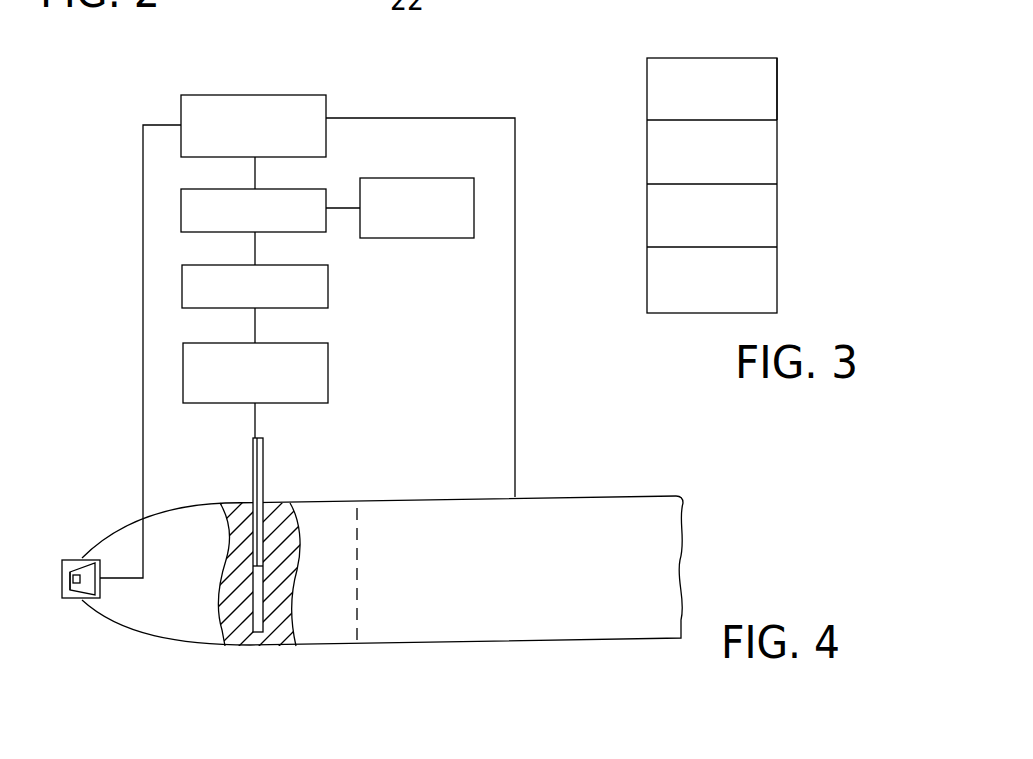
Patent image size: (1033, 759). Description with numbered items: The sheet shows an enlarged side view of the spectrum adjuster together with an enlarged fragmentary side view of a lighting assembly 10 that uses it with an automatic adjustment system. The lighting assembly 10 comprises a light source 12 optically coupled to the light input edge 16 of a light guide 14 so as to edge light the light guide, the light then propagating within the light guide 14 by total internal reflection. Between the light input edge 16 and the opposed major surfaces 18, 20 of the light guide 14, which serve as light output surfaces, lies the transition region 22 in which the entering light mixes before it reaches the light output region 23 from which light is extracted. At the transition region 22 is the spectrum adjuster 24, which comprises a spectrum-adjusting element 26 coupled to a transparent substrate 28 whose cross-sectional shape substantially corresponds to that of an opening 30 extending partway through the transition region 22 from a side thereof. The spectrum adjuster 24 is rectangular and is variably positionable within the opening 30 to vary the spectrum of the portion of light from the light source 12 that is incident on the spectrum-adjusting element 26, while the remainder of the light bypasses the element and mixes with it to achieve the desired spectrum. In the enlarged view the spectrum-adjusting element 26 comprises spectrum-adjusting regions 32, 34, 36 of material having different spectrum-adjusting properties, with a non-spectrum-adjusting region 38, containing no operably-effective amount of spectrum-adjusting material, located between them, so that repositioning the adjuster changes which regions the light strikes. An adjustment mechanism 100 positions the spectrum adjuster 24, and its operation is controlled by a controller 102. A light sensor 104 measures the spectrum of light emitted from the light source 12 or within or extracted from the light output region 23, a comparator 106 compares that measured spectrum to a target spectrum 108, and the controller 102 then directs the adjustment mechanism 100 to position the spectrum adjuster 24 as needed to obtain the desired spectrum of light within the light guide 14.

In FIG. 4, the lighting assembly 10 is at (540, 466).
In FIG. 4, the light source 12 is at (66, 573).
In FIG. 4, the light guide 14 is at (642, 512).
In FIG. 4, the light input edge 16 is at (105, 560).
In FIG. 4, the major surface 18 is at (592, 497).
In FIG. 4, the major surface 20 is at (608, 643).
In FIG. 4, the transition region 22 is at (333, 632).
In FIG. 4, the light output region 23 is at (486, 497).
In FIG. 3, the spectrum adjuster 24 is at (780, 45).
In FIG. 4, the spectrum adjuster 24 is at (272, 454).
In FIG. 3, the spectrum-adjusting element 26 is at (765, 79).
In FIG. 4, the spectrum-adjusting element 26 is at (266, 490).
In FIG. 4, the substrate 28 is at (255, 480).
In FIG. 4, the opening 30 is at (297, 527).
In FIG. 3, the spectrum-adjusting region 32 is at (652, 91).
In FIG. 4, the spectrum-adjusting region 32 is at (297, 547).
In FIG. 3, the spectrum-adjusting region 34 is at (660, 148).
In FIG. 3, the spectrum-adjusting region 36 is at (657, 281).
In FIG. 3, the non-spectrum-adjusting region 38 is at (660, 218).
In FIG. 4, the adjustment mechanism 100 is at (328, 373).
In FIG. 4, the controller 102 is at (328, 283).
In FIG. 4, the light sensor 104 is at (190, 117).
In FIG. 4, the comparator 106 is at (185, 207).
In FIG. 4, the target spectrum 108 is at (435, 238).